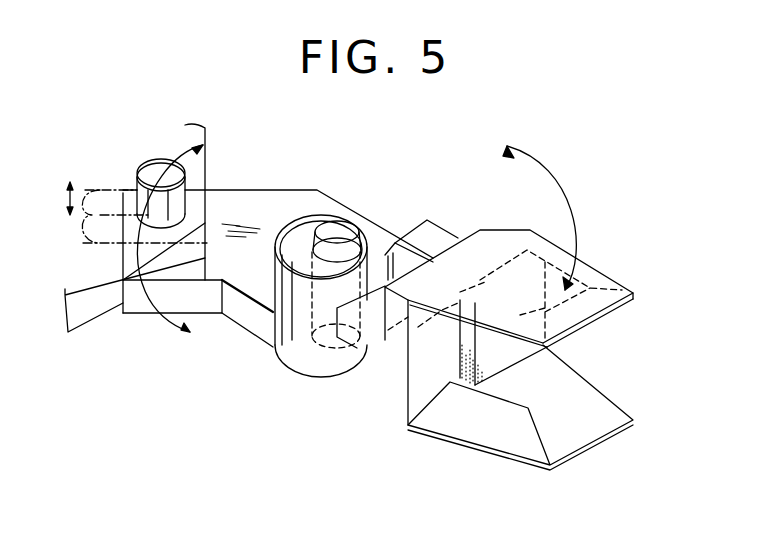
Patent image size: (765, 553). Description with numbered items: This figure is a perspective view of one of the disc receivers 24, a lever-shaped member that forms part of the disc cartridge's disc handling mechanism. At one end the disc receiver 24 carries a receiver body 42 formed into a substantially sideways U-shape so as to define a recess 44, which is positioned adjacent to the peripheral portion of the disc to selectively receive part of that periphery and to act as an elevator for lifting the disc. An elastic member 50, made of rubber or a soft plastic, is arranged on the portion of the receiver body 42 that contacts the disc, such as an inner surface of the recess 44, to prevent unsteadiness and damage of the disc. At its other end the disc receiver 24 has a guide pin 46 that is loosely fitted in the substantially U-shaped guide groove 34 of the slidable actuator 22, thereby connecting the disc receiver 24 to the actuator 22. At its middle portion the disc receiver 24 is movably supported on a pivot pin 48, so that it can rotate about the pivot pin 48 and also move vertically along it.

The actuator 22 is at (93, 322).
The disc receiver 24 is at (262, 190).
The guide groove 34 is at (98, 207).
The receiver body 42 is at (392, 387).
The recess 44 is at (613, 352).
The guide pin 46 is at (153, 170).
The pivot pin 48 is at (347, 230).
The elastic member 50 is at (510, 357).